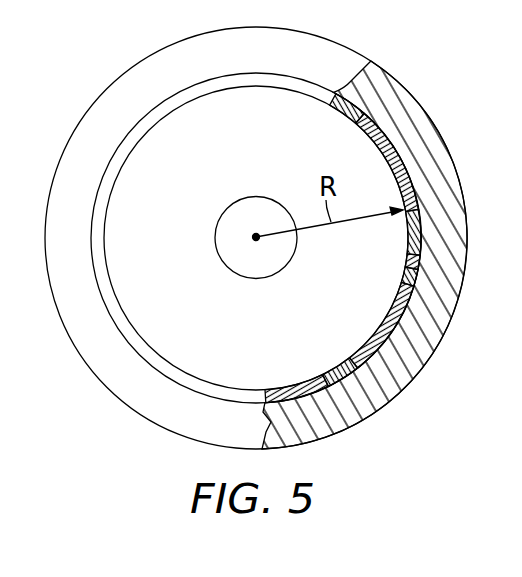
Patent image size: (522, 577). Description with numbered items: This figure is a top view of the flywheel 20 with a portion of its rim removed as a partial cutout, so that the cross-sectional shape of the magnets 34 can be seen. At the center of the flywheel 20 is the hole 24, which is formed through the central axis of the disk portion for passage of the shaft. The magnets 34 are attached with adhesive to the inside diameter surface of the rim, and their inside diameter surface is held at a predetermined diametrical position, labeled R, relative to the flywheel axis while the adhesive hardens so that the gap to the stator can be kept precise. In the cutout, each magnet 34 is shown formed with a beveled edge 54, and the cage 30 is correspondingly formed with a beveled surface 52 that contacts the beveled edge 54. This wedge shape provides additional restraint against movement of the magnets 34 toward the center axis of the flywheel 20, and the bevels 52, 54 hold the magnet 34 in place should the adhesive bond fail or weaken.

The flywheel 20 is at (98, 75).
The hole 24 is at (256, 200).
The cage 30 is at (388, 163).
The magnets 34 is at (360, 128).
The beveled surface 52 is at (405, 263).
The beveled edge 54 is at (400, 276).